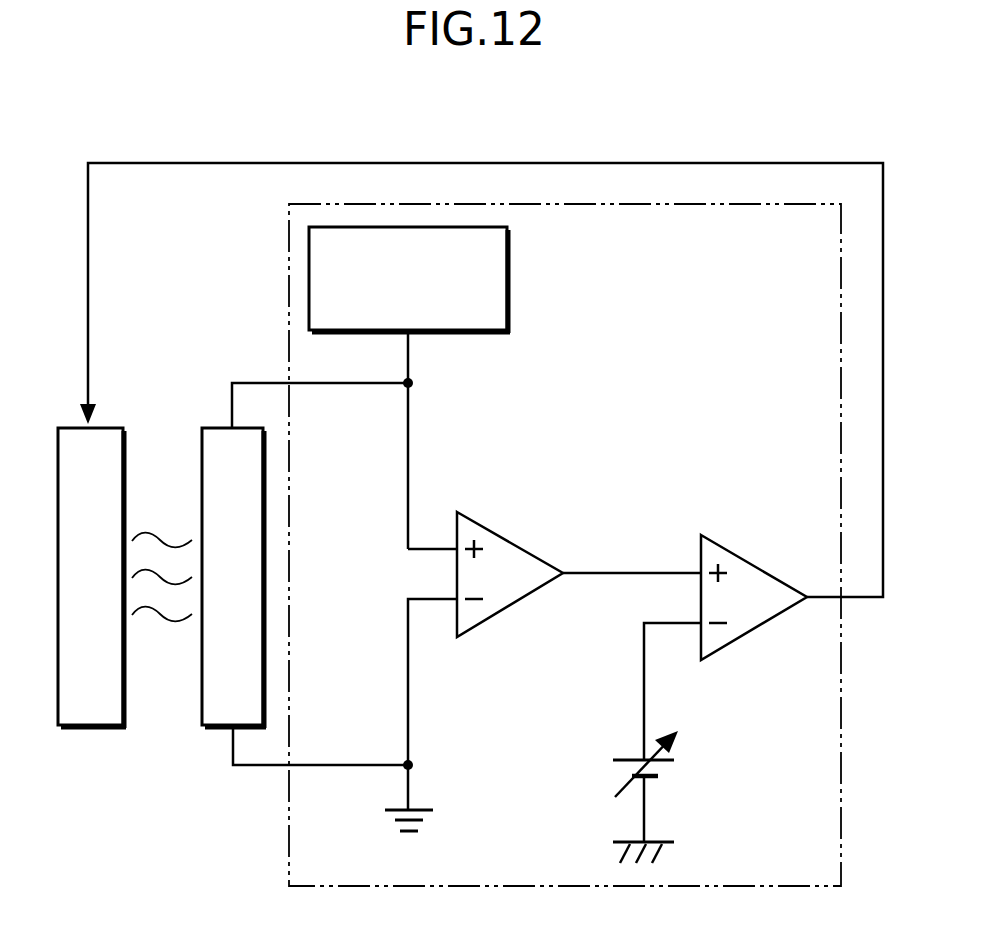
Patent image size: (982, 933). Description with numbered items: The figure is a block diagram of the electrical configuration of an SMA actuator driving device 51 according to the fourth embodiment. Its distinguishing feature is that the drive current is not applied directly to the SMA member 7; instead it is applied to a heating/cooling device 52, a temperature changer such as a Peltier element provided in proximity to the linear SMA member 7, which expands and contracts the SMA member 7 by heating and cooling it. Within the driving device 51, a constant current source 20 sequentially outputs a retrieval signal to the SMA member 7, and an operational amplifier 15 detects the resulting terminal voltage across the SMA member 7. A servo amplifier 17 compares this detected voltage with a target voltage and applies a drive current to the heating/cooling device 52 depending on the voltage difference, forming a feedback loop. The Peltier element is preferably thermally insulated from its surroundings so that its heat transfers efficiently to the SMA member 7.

The SMA actuator driving device 51 is at (288, 222).
The constant current source 20 is at (508, 250).
The SMA member 7 is at (221, 428).
The heating/cooling device 52 is at (75, 428).
The operational amplifier 15 is at (517, 546).
The servo amplifier 17 is at (769, 571).